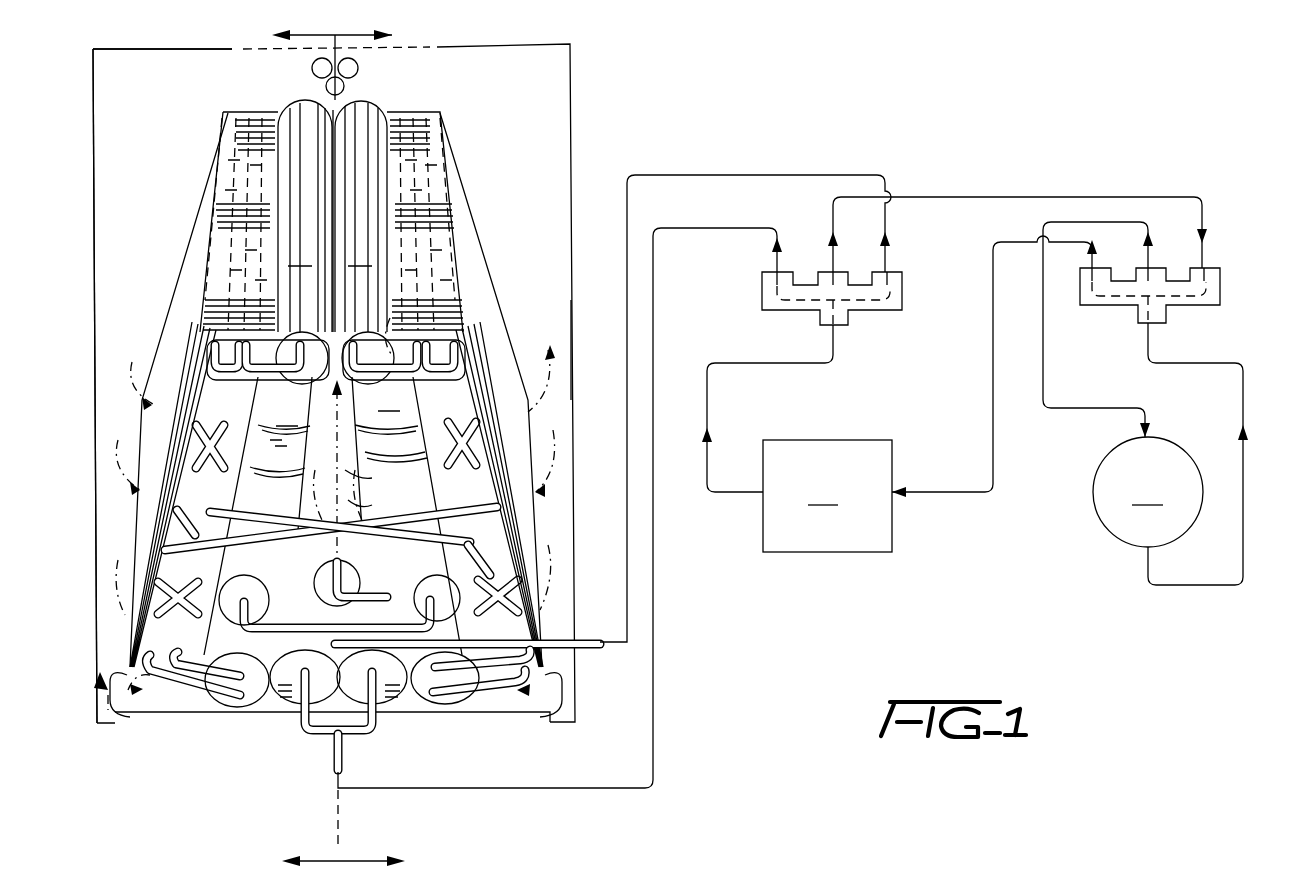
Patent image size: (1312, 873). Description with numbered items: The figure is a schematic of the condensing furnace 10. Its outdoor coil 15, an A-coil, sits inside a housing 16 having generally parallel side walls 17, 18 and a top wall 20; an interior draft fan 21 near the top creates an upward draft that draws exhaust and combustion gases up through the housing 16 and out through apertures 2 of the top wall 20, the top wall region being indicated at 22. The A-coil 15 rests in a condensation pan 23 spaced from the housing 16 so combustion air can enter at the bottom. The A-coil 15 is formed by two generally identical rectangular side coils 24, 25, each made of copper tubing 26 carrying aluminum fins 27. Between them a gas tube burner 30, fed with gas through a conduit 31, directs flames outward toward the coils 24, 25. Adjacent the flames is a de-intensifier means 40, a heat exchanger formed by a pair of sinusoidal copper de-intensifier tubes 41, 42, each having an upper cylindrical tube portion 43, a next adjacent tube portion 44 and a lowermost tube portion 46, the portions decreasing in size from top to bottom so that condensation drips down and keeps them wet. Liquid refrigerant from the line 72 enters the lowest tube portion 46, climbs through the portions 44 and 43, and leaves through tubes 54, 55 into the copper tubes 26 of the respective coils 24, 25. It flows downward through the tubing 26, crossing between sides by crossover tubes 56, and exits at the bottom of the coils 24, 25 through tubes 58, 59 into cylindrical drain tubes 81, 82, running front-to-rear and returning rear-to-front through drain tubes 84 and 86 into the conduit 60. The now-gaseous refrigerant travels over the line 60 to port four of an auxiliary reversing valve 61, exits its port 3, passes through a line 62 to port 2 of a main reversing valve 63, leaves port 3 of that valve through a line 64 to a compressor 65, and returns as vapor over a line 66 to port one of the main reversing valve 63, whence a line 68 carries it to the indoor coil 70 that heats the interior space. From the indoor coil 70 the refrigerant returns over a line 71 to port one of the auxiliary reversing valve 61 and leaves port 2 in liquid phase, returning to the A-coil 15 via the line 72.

The condensing furnace 10 is at (716, 103).
The outdoor coil 15 is at (505, 125).
The housing 16 is at (571, 128).
The side wall 17 is at (95, 212).
The side wall 18 is at (573, 368).
The top wall 20 is at (143, 51).
The draft fan 21 is at (312, 80).
The top wall section 22 is at (210, 48).
The condensation pan 23 is at (165, 713).
The rectangular coil 24 is at (170, 298).
The rectangular coil 25 is at (495, 283).
The copper tubing 26 is at (242, 163).
The aluminum fins 27 is at (432, 158).
The gas tube burner 30 is at (358, 455).
The conduit 31 is at (331, 575).
The de-intensifier means 40 is at (330, 195).
The de-intensifier tube 41 is at (298, 220).
The de-intensifier tube 42 is at (370, 213).
The upper cylindrical tube portion 43 is at (329, 253).
The next adjacent cylindrical tube portion 44 is at (333, 516).
The lowermost tube portion 46 is at (218, 578).
The tube 54 is at (282, 352).
The tube 55 is at (212, 372).
The crossover tubes 56 is at (374, 485).
The tube 58 is at (198, 660).
The tube 59 is at (132, 665).
The line 60 is at (302, 735).
The auxiliary reversing valve 61 is at (912, 292).
The line 62 is at (1005, 197).
The main reversing valve 63 is at (1228, 292).
The line 64 is at (1045, 372).
The compressor 65 is at (1148, 492).
The line 66 is at (1245, 542).
The line 68 is at (993, 418).
The indoor coil 70 is at (827, 496).
The conduit 71 is at (708, 405).
The line 72 is at (627, 318).
The cylindrical drain tube 81 is at (245, 705).
The cylindrical drain tube 82 is at (432, 705).
The enlarged cylindrical drain tube 84 is at (292, 705).
The drain tube 86 is at (392, 705).
The apertures 2 is at (323, 448).
The valve port 3 is at (397, 446).